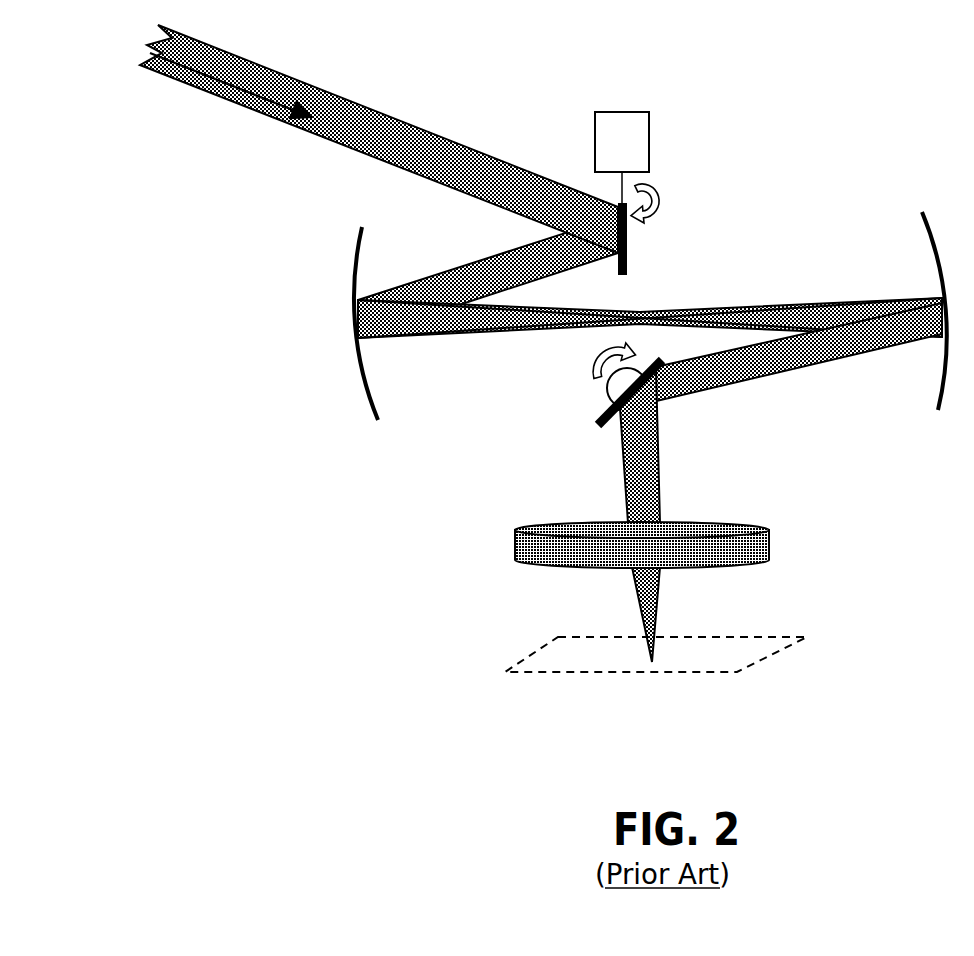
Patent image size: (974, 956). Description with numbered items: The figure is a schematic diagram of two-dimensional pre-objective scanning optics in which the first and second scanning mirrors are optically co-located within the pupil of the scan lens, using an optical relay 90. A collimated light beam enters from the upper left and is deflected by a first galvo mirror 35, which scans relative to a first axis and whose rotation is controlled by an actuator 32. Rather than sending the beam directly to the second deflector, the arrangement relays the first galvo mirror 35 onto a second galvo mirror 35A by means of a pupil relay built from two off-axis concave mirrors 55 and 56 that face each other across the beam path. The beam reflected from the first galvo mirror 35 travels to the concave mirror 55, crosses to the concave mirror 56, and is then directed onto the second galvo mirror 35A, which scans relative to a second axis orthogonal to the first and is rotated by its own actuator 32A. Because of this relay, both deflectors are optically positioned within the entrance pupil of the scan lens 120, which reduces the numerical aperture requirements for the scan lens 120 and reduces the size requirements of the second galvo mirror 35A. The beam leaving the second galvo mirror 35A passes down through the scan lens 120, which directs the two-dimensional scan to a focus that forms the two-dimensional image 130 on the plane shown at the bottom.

The actuator 32 is at (651, 116).
The optical relay 90 is at (893, 105).
The first galvo mirror 35 is at (627, 244).
The actuator 32A is at (606, 400).
The second galvo mirror 35A is at (593, 427).
The off-axis concave mirror 55 is at (380, 422).
The off-axis concave mirror 56 is at (937, 407).
The scan lens 120 is at (771, 541).
The 2-D image 130 is at (782, 650).